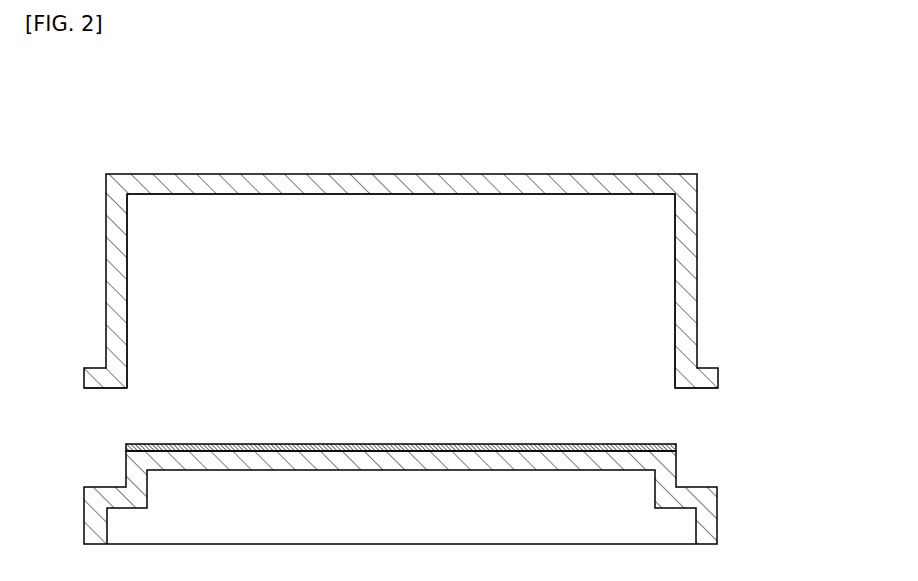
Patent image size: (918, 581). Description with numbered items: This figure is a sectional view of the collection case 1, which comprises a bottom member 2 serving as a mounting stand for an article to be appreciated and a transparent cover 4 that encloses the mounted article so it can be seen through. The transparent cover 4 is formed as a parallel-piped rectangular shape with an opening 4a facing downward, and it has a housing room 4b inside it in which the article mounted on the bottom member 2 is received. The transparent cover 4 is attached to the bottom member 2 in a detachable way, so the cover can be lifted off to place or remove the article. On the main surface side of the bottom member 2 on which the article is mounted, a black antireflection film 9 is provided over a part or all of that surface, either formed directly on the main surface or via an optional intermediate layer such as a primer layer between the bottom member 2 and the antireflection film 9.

The collection case 1 is at (437, 256).
The bottom member 2 is at (97, 487).
The transparent cover 4 is at (697, 218).
The opening 4a is at (562, 369).
The housing room 4b is at (579, 302).
The antireflection film 9 is at (350, 443).